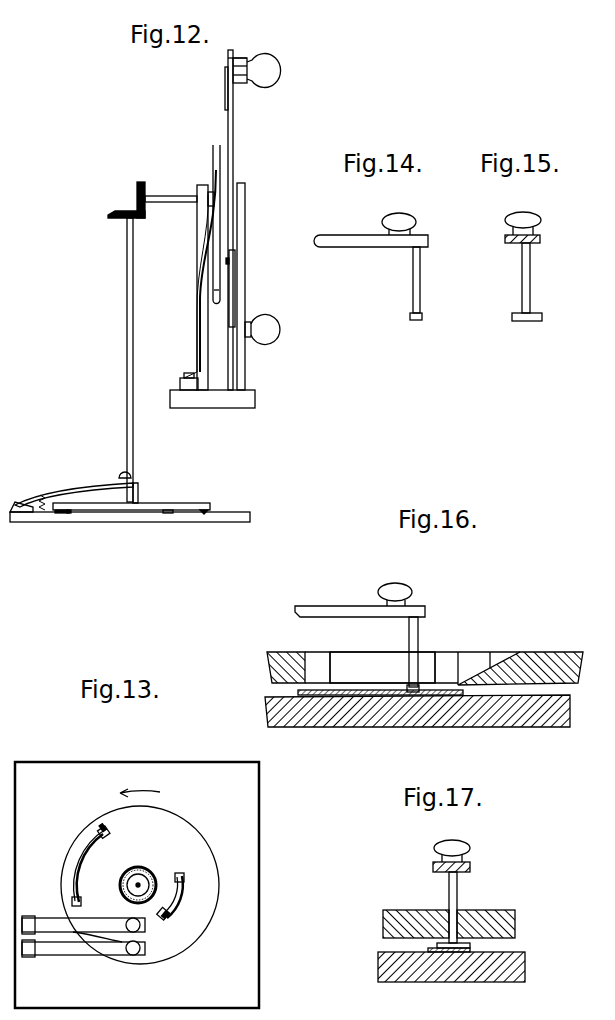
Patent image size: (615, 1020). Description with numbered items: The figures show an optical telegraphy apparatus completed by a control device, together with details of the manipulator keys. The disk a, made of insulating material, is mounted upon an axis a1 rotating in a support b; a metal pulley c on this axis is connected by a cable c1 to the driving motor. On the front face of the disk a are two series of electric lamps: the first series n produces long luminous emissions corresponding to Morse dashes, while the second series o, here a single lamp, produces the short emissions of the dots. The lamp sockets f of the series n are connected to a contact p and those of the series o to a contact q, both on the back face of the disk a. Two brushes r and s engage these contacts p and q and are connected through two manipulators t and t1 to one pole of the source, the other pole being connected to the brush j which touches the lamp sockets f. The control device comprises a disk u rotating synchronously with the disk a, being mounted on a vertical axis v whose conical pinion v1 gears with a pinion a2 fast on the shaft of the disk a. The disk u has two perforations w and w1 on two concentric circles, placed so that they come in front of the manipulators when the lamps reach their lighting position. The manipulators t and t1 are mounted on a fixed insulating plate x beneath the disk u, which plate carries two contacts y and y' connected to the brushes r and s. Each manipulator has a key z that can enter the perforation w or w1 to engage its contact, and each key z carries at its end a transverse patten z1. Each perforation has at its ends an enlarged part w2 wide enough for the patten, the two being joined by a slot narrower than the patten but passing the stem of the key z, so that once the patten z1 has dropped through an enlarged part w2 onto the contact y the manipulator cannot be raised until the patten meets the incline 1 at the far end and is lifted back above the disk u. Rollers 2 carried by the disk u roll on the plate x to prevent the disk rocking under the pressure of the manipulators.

In FIG. 12, the disk a is at (233, 128).
In FIG. 12, the axis a1 is at (173, 199).
In FIG. 12, the pinion a2 is at (140, 190).
In FIG. 12, the support b is at (198, 240).
In FIG. 12, the metal pulley c is at (213, 151).
In FIG. 12, the cable c1 is at (228, 292).
In FIG. 12, the lamp sockets f is at (237, 60).
In FIG. 12, the brush j is at (245, 198).
In FIG. 12, the first series of lamps n is at (268, 67).
In FIG. 12, the second series of lamps o is at (266, 328).
In FIG. 12, the contact p is at (225, 80).
In FIG. 12, the contact q is at (235, 263).
In FIG. 12, the brush r is at (188, 280).
In FIG. 12, the brush s is at (198, 330).
In FIG. 12, the manipulator t is at (100, 477).
In FIG. 14, the manipulator t is at (331, 240).
In FIG. 15, the manipulator t is at (540, 239).
In FIG. 16, the manipulator t is at (322, 612).
In FIG. 13, the manipulator t is at (57, 950).
In FIG. 17, the manipulator t is at (470, 866).
In FIG. 12, the manipulator t1 is at (84, 484).
In FIG. 13, the manipulator t1 is at (47, 922).
In FIG. 12, the disk u is at (165, 502).
In FIG. 16, the disk u is at (275, 655).
In FIG. 13, the disk u is at (140, 876).
In FIG. 17, the disk u is at (403, 912).
In FIG. 12, the vertical axis v is at (127, 330).
In FIG. 13, the vertical axis v is at (140, 883).
In FIG. 12, the conical pinion v1 is at (118, 212).
In FIG. 13, the conical pinion v1 is at (137, 882).
In FIG. 16, the perforation w is at (355, 662).
In FIG. 13, the perforation w is at (80, 866).
In FIG. 17, the perforation w is at (469, 910).
In FIG. 13, the perforation w1 is at (180, 892).
In FIG. 16, the enlarged part w2 is at (317, 662).
In FIG. 13, the enlarged part w2 is at (181, 922).
In FIG. 12, the fixed plate x is at (238, 523).
In FIG. 16, the fixed plate x is at (340, 720).
In FIG. 13, the fixed plate x is at (137, 885).
In FIG. 17, the fixed plate x is at (432, 985).
In FIG. 12, the contact y is at (63, 532).
In FIG. 16, the contact y is at (349, 690).
In FIG. 17, the contact y is at (485, 952).
In FIG. 12, the contact y' is at (169, 532).
In FIG. 14, the key z is at (420, 287).
In FIG. 15, the key z is at (530, 280).
In FIG. 16, the key z is at (416, 645).
In FIG. 17, the key z is at (449, 891).
In FIG. 14, the patten z1 is at (416, 320).
In FIG. 15, the patten z1 is at (531, 322).
In FIG. 16, the patten z1 is at (407, 685).
In FIG. 17, the patten z1 is at (437, 945).
In FIG. 16, the incline 1 is at (490, 665).
In FIG. 13, the incline 1 is at (134, 878).
In FIG. 12, the rollers 2 is at (55, 514).